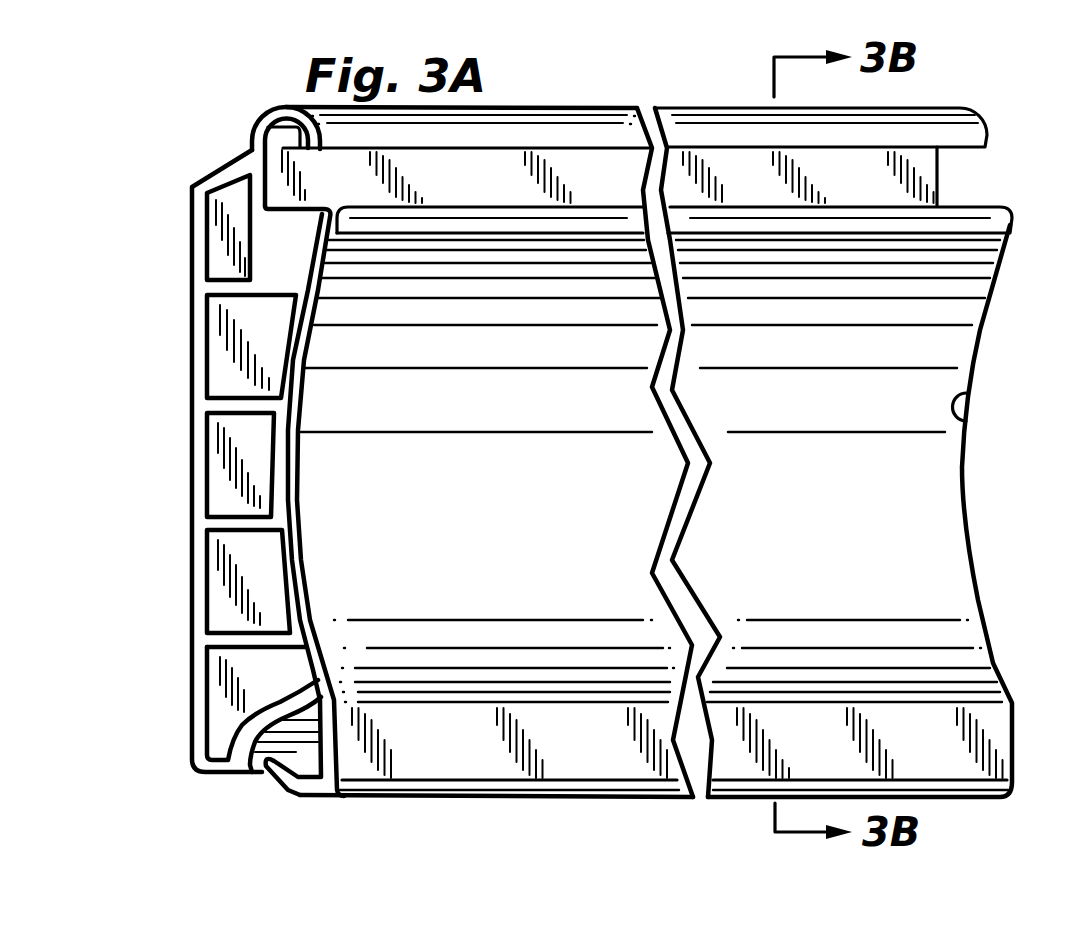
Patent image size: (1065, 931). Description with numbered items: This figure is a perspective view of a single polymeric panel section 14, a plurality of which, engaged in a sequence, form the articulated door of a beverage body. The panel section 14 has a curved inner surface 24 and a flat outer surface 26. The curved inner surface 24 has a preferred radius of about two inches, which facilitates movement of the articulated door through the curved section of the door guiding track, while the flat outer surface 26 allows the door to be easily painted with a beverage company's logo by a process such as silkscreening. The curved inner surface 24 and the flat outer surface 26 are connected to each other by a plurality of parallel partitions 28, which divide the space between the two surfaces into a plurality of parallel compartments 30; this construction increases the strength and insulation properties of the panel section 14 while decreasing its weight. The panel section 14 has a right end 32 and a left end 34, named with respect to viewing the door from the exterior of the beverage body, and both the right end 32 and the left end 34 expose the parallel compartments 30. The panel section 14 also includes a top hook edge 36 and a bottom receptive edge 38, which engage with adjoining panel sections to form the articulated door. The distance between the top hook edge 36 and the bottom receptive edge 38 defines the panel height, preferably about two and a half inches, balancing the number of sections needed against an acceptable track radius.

The panel section 14 is at (388, 801).
The curved inner surface 24 is at (887, 521).
The flat outer surface 26 is at (188, 742).
The parallel partitions 28 is at (237, 298).
The parallel compartments 30 is at (237, 203).
The right end 32 is at (327, 236).
The left end 34 is at (967, 423).
The top hook edge 36 is at (538, 108).
The bottom receptive edge 38 is at (600, 797).